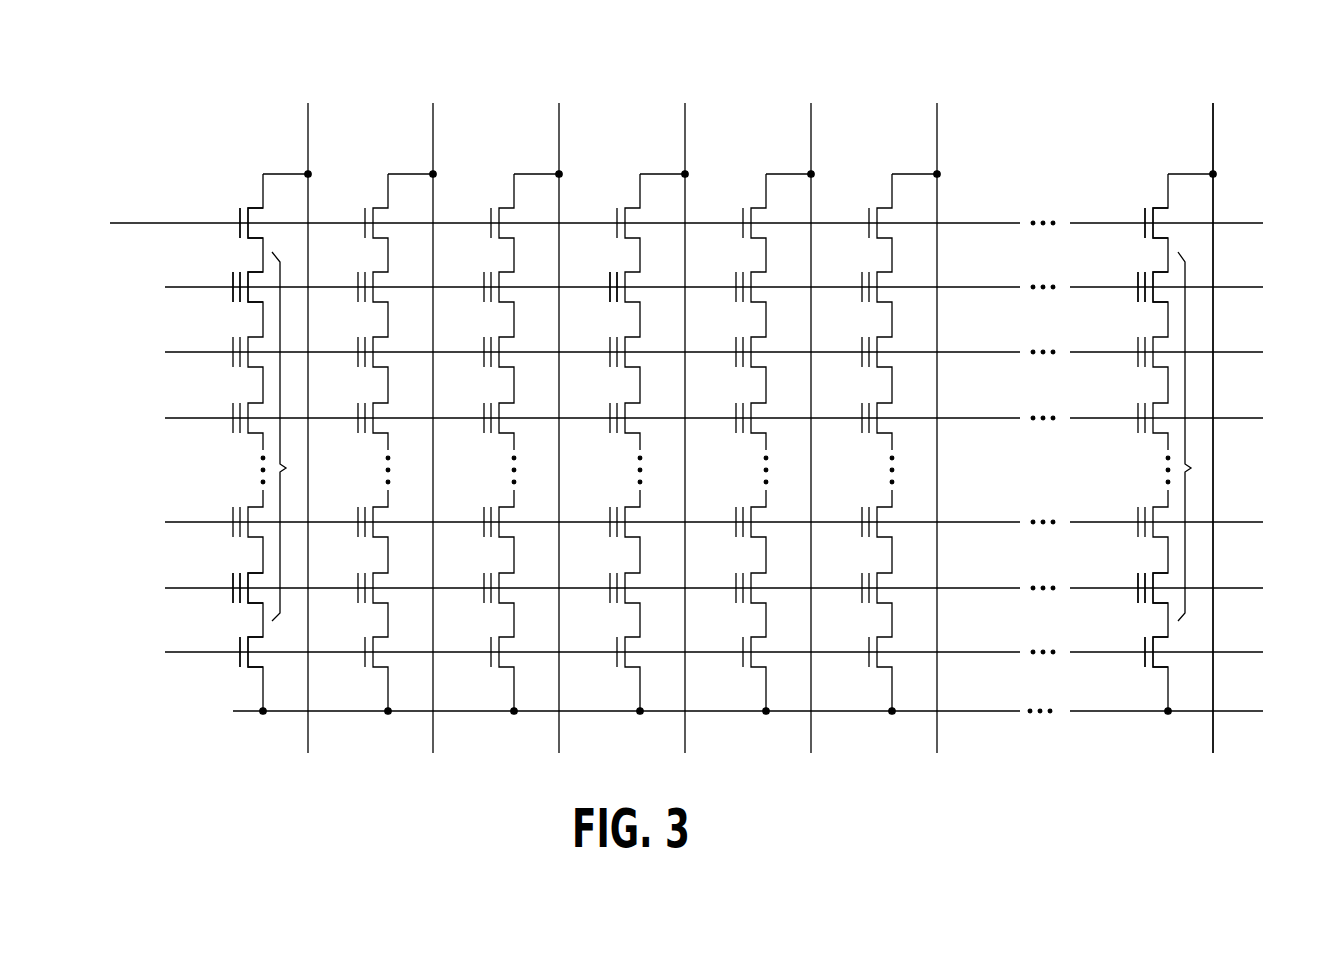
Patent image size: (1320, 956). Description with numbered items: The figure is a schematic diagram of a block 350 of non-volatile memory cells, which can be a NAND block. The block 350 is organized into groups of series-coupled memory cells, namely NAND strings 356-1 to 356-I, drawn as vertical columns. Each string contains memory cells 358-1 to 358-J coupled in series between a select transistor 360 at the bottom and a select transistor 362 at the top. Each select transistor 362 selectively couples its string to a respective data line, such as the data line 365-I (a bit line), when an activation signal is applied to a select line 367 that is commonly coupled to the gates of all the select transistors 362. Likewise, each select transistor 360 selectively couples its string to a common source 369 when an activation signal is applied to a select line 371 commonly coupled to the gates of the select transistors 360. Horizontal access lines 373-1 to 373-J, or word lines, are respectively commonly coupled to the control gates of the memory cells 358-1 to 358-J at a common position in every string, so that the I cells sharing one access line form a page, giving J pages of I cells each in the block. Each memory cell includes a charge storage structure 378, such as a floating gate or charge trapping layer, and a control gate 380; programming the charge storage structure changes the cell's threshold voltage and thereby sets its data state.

The block 350 is at (1056, 92).
The NAND string 356-1 is at (309, 130).
The NAND string 356-I is at (1191, 468).
The memory cell 358-1 is at (257, 605).
The memory cell 358-J is at (257, 305).
The select transistor 360 is at (252, 672).
The select transistor 362 is at (256, 207).
The data line 365-I is at (1214, 132).
The select line 367 is at (1232, 222).
The common source 369 is at (467, 714).
The select line 371 is at (1233, 653).
The access line 373-1 is at (196, 588).
The access line 373-J is at (196, 286).
The charge storage structure 378 is at (617, 272).
The control gate 380 is at (610, 298).